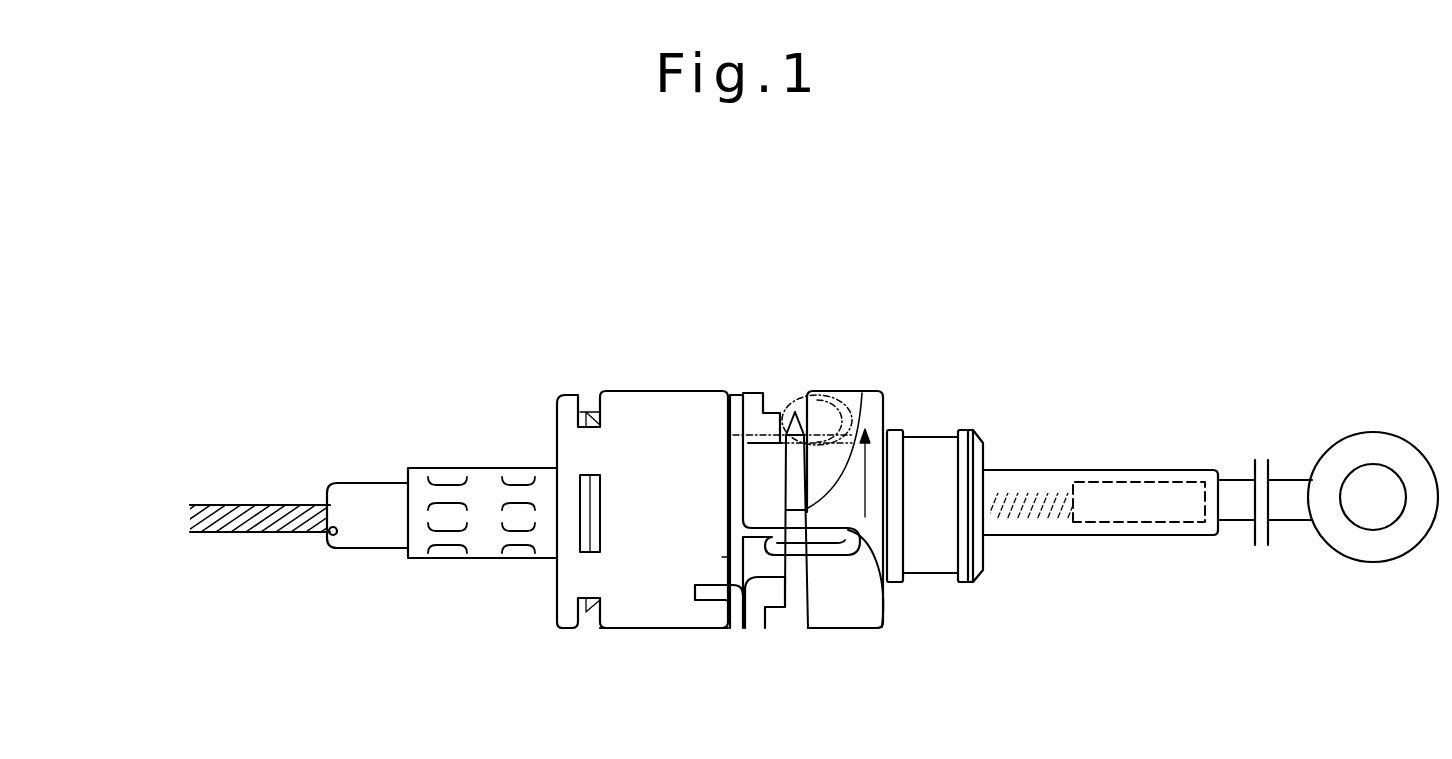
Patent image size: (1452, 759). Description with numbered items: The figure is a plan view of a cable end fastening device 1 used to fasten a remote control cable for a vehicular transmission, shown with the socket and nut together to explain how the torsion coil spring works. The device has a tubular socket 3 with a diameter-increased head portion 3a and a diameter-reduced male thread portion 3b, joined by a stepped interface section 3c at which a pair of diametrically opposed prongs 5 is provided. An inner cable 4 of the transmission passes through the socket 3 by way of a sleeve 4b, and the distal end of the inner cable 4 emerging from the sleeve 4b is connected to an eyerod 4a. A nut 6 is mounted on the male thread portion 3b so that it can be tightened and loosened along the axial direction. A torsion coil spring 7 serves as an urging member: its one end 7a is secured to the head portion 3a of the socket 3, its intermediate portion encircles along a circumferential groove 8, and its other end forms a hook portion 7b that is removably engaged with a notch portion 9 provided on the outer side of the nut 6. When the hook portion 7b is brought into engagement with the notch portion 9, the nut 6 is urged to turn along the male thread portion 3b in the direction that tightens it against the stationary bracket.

The cable end fastening device 1 is at (822, 370).
The tubular socket 3 is at (640, 445).
The diameter-increased head portion 3a is at (624, 615).
The diameter-reduced male thread portion 3b is at (862, 397).
The stepped interface section 3c is at (796, 600).
The inner cable 4 is at (1032, 493).
The eyerod 4a is at (1285, 497).
The sleeve 4b is at (1158, 470).
The prongs 5 is at (778, 395).
The nut 6 is at (867, 617).
The torsion coil spring 7 is at (730, 462).
The one end of torsion coil spring 7a is at (699, 612).
The hook portion 7b is at (808, 560).
The circumferential groove 8 is at (727, 557).
The notch portion 9 is at (887, 603).